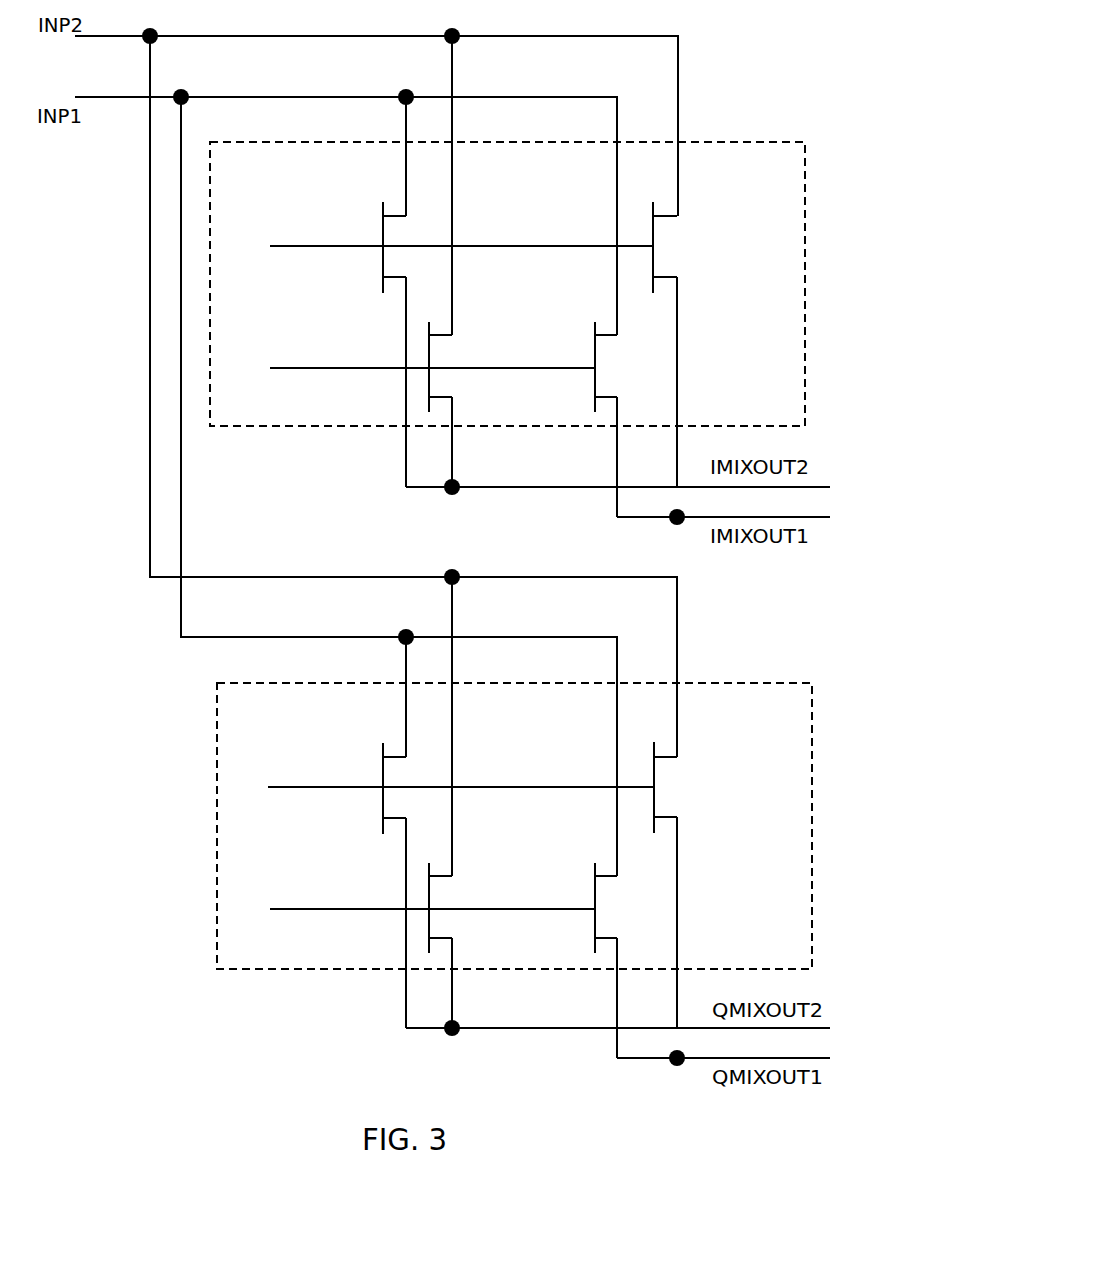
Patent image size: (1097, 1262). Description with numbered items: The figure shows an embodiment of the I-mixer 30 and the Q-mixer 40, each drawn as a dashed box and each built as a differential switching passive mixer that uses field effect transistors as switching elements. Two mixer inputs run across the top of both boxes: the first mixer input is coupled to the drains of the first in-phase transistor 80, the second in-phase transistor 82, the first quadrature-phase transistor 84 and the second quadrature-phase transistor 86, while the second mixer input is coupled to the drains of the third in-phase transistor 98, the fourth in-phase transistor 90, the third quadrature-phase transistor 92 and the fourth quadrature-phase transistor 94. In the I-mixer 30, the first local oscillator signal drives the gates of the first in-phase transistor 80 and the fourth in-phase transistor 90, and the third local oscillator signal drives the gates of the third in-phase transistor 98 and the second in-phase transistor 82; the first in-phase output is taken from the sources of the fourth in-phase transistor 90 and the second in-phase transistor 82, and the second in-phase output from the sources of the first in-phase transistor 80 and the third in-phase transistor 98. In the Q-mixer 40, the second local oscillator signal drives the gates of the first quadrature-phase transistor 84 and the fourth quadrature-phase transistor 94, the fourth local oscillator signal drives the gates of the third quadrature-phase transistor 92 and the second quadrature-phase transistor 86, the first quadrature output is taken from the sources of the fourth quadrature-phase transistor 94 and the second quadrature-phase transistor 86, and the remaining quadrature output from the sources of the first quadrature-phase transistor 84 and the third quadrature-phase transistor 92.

The I-mixer 30 is at (779, 184).
The Q-mixer 40 is at (788, 725).
The first in-phase transistor 80 is at (369, 344).
The second in-phase transistor 82 is at (581, 419).
The fourth in-phase transistor 90 is at (685, 344).
The third in-phase transistor 98 is at (460, 404).
The first quadrature-phase transistor 84 is at (369, 832).
The second quadrature-phase transistor 86 is at (581, 960).
The third quadrature-phase transistor 92 is at (461, 802).
The fourth quadrature-phase transistor 94 is at (686, 885).